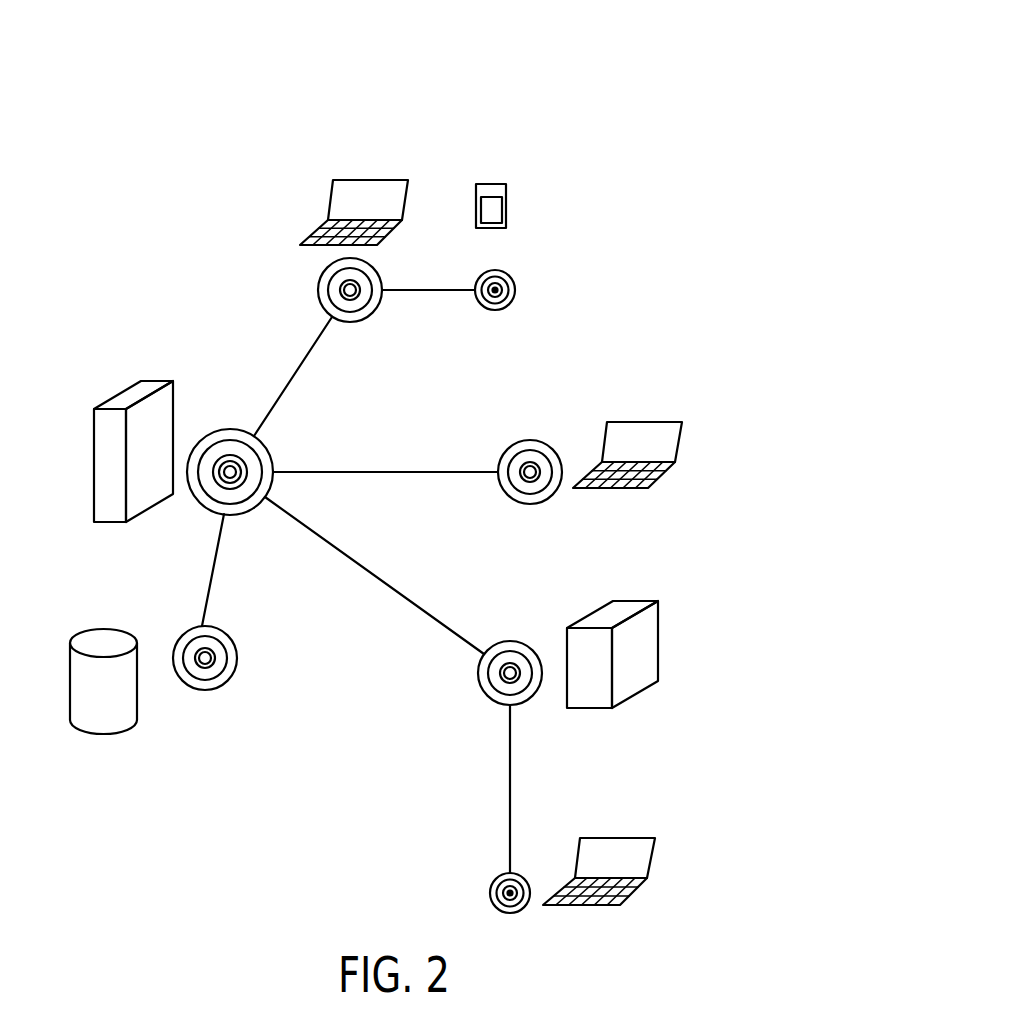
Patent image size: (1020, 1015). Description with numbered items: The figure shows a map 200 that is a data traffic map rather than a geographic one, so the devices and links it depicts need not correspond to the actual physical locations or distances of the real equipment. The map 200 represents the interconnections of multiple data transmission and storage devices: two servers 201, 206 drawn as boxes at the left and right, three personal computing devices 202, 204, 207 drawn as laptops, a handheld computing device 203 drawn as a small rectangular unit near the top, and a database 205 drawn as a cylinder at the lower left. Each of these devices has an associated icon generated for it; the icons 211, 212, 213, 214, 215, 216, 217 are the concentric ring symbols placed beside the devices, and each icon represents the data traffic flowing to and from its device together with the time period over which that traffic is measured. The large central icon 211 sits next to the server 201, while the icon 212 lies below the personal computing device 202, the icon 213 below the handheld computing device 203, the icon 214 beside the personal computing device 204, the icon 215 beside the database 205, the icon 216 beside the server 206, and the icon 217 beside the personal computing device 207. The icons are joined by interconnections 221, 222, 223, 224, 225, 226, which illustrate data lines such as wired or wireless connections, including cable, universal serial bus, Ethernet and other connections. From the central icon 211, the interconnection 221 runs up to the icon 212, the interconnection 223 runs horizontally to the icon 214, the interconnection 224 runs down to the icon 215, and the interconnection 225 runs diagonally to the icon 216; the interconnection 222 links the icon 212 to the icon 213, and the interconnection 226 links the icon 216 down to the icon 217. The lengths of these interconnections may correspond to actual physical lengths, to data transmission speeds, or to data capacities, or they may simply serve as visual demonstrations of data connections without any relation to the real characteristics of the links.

The map 200 is at (640, 76).
The server 201 is at (120, 392).
The personal computing device 202 is at (350, 180).
The handheld computing device 203 is at (490, 184).
The personal computing device 204 is at (670, 421).
The database 205 is at (85, 630).
The server 206 is at (641, 598).
The personal computing device 207 is at (645, 838).
The icon 211 is at (215, 431).
The icon 212 is at (356, 321).
The icon 213 is at (505, 309).
The icon 214 is at (537, 441).
The icon 215 is at (218, 688).
The icon 216 is at (515, 642).
The icon 217 is at (518, 874).
The interconnection 221 is at (304, 360).
The interconnection 222 is at (428, 289).
The interconnection 223 is at (411, 471).
The interconnection 224 is at (209, 594).
The interconnection 225 is at (396, 591).
The interconnection 226 is at (510, 786).